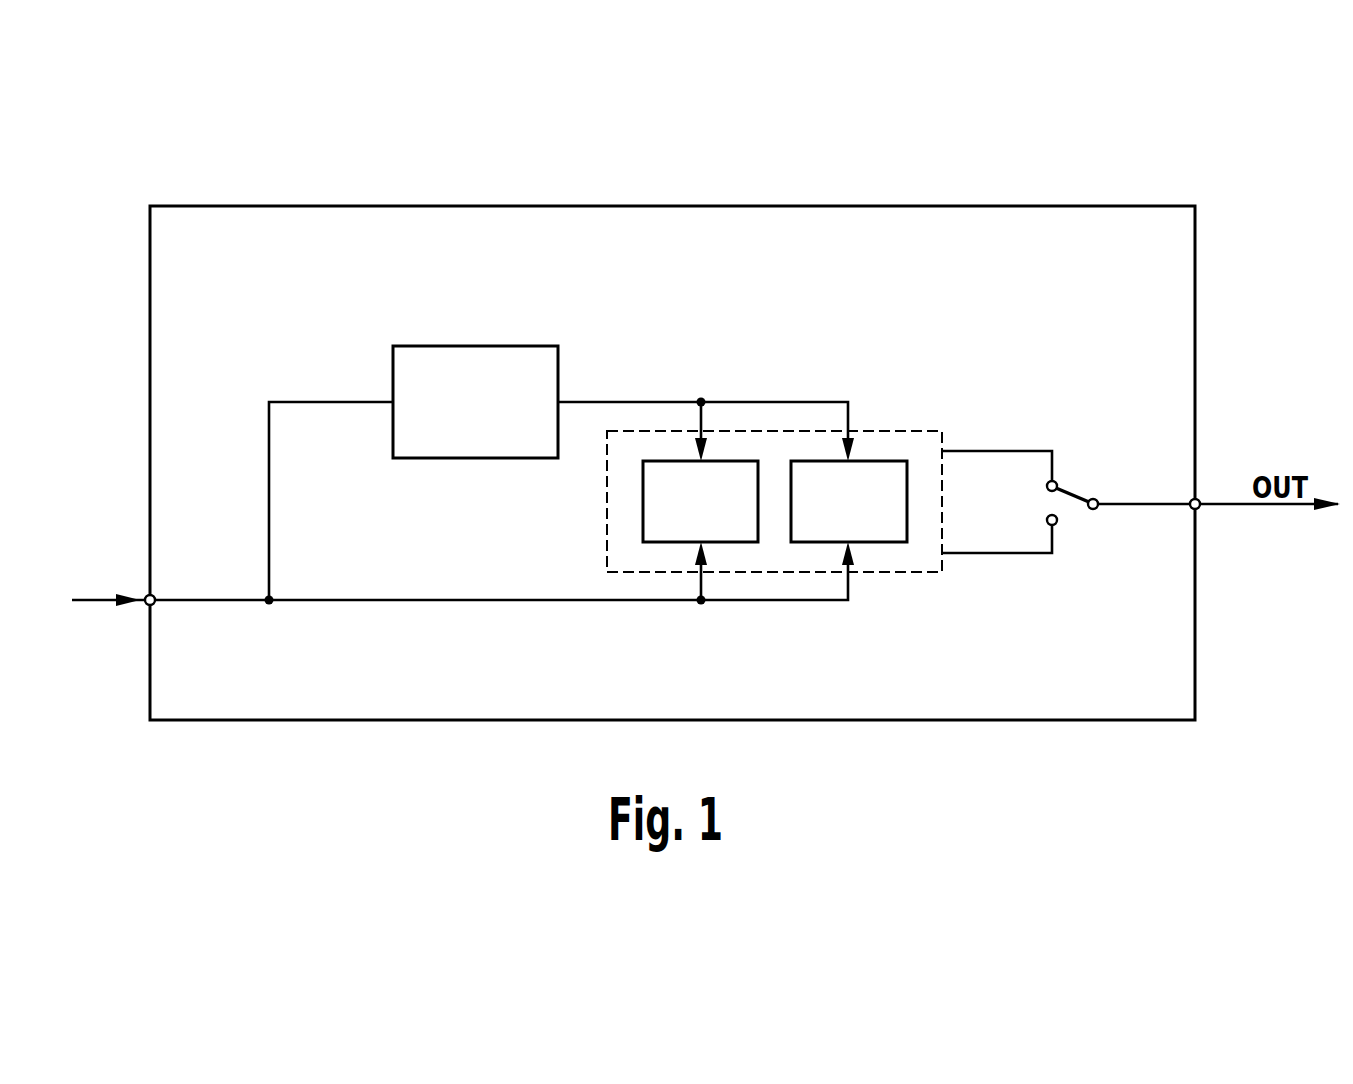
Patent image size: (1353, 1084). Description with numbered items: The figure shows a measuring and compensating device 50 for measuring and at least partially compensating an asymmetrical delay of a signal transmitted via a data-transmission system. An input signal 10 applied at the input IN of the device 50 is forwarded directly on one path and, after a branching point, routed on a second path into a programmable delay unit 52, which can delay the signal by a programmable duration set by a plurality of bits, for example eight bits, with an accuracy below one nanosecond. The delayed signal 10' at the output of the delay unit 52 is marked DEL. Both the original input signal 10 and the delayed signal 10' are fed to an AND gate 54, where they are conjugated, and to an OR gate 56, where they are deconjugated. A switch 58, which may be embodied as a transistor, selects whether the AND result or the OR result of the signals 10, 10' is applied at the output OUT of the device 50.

The measuring and compensating device 50 is at (1120, 228).
The input signal 10 is at (113, 630).
The delayed signal 10' is at (774, 438).
The programmable delay unit 52 is at (476, 372).
The AND gate 54 is at (658, 527).
The OR gate 56 is at (805, 527).
The switch 58 is at (1073, 495).